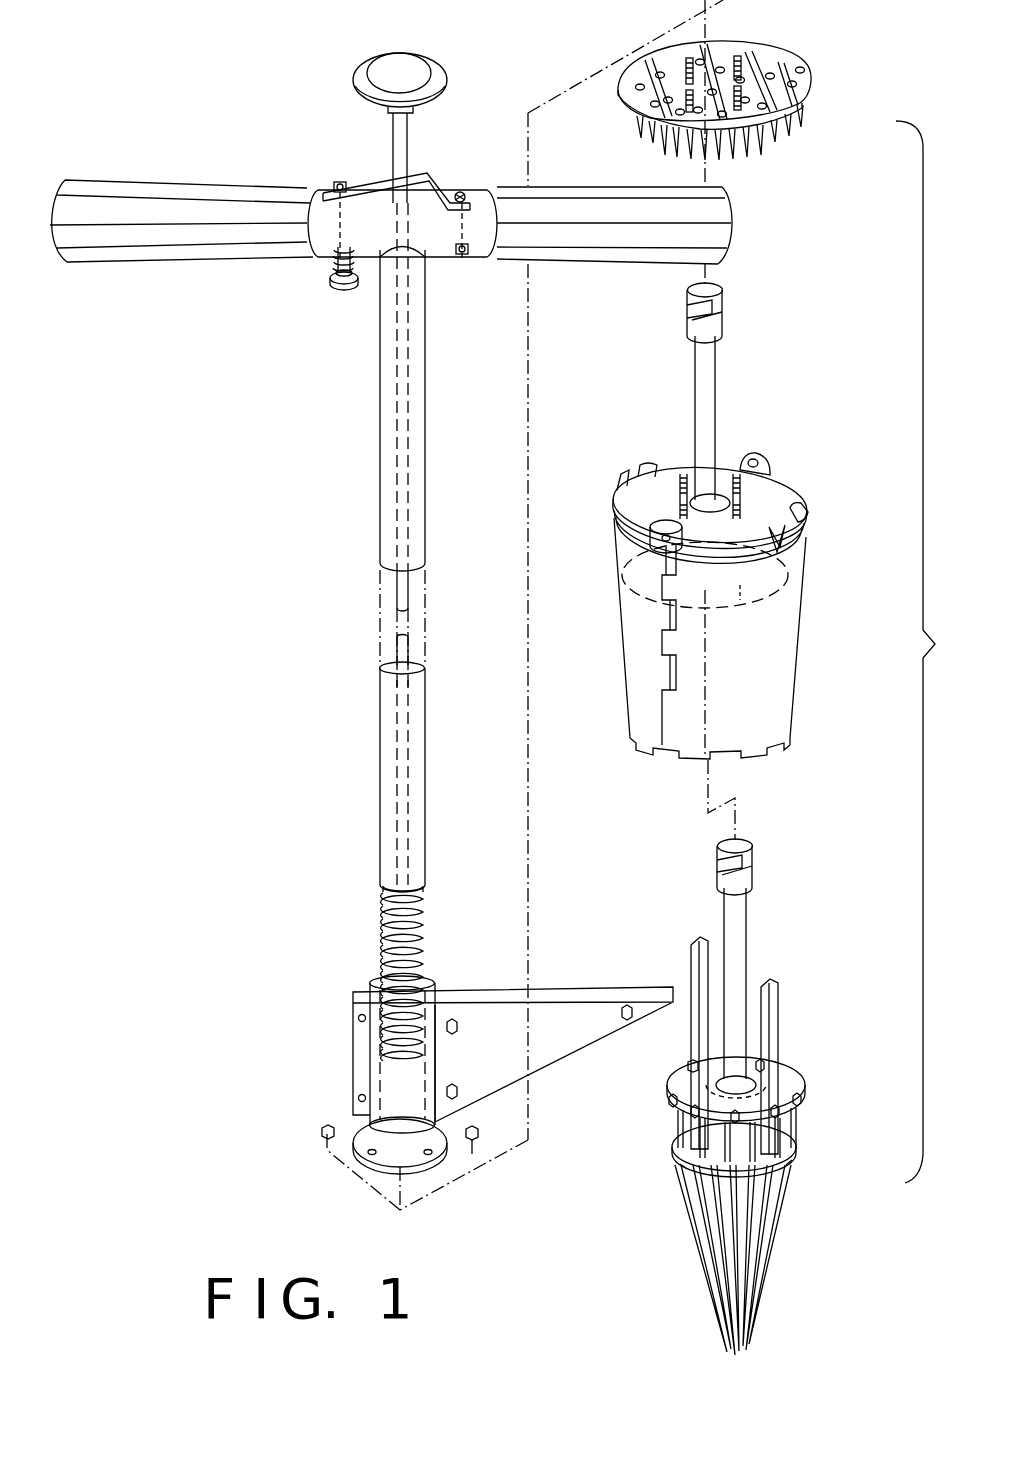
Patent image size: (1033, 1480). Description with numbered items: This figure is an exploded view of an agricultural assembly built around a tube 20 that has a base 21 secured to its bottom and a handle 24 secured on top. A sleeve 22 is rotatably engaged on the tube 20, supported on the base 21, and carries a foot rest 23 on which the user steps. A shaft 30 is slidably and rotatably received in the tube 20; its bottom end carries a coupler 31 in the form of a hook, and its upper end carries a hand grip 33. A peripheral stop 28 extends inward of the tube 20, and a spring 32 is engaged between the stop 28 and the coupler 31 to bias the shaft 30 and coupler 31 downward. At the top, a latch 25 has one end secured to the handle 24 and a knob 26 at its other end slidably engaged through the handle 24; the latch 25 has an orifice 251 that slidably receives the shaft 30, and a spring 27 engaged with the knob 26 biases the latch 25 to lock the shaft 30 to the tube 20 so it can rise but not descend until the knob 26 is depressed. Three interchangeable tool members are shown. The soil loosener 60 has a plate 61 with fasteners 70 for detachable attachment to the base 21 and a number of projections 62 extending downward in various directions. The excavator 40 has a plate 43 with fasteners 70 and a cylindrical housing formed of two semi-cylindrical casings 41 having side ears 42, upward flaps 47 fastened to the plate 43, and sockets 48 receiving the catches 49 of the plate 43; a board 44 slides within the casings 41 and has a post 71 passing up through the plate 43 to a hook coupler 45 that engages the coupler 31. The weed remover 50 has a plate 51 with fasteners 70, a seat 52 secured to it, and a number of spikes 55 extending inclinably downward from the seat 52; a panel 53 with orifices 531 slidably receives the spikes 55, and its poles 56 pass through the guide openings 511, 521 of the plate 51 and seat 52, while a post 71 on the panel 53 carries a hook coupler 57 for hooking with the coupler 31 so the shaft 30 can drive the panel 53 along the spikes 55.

The tube 20 is at (381, 468).
The base 21 is at (392, 1158).
The sleeve 22 is at (370, 1138).
The foot rest 23 is at (540, 1002).
The handle 24 is at (510, 243).
The latch 25 is at (360, 177).
The orifice 251 is at (406, 186).
The knob 26 is at (343, 293).
The spring 27 is at (327, 263).
The peripheral stop 28 is at (387, 887).
The shaft 30 is at (402, 770).
The coupler 31 is at (387, 1067).
The spring 32 is at (383, 928).
The hand grip 33 is at (408, 62).
The excavator 40 is at (828, 580).
The casing 41 is at (628, 660).
The side ear 42 is at (667, 700).
The plate 43 is at (668, 470).
The board 44 is at (738, 591).
The coupler 45 is at (722, 332).
The flap 47 is at (744, 455).
The socket 48 is at (618, 475).
The catch 49 is at (790, 535).
The weed remover 50 is at (808, 1183).
The plate 51 is at (790, 1067).
The guide opening 511 is at (800, 1092).
The seat 52 is at (802, 1108).
The guide opening 521 is at (763, 1117).
The panel 53 is at (796, 1145).
The orifice 531 is at (682, 1172).
The spike 55 is at (700, 1241).
The pole 56 is at (774, 975).
The coupler 57 is at (748, 883).
The soil loosener 60 is at (813, 97).
The plate 61 is at (802, 72).
The projection 62 is at (755, 132).
The fastener 70 is at (740, 57).
The post 71 is at (707, 363).